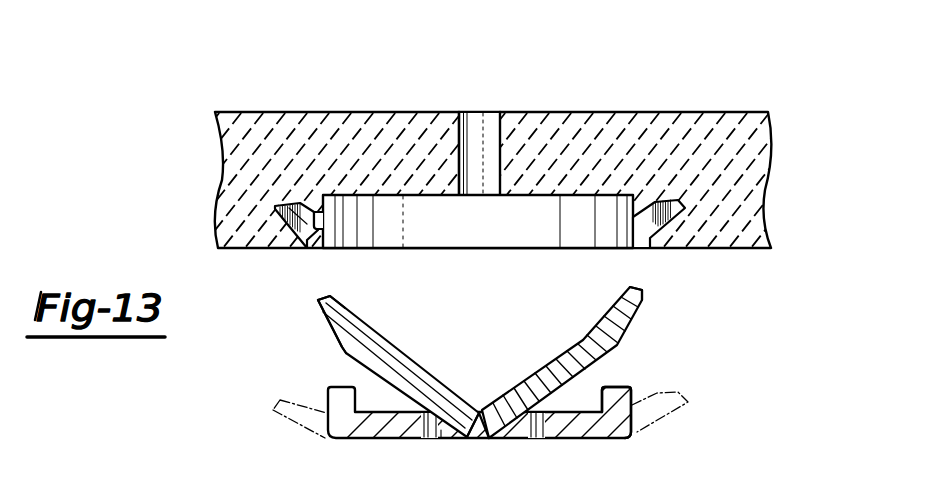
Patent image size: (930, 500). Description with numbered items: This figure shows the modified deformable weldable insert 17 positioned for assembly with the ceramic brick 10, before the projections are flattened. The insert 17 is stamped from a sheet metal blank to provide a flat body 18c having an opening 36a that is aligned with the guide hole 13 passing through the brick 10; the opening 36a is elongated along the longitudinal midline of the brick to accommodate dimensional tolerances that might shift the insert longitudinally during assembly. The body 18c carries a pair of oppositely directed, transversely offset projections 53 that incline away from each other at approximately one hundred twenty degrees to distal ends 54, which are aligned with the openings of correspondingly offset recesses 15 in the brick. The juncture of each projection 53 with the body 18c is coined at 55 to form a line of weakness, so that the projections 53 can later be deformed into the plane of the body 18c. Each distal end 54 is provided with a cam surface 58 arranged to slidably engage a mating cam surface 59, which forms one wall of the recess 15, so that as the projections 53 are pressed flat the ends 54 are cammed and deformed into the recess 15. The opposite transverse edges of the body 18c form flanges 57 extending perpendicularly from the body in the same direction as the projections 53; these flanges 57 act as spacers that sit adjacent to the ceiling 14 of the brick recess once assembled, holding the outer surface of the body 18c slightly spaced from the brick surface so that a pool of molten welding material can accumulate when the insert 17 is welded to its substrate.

The ceramic brick 10 is at (790, 144).
The guide hole 13 is at (488, 118).
The ceiling 14 is at (512, 196).
The recess 15 is at (273, 250).
The cam surface 59 is at (318, 229).
The deformable weldable insert 17 is at (632, 357).
The projection 53 is at (437, 378).
The distal end 54 is at (355, 313).
The coined juncture 55 is at (483, 408).
The flange 57 is at (603, 387).
The cam surface 58 is at (342, 300).
The opening 36a is at (532, 438).
The body 18c is at (597, 438).